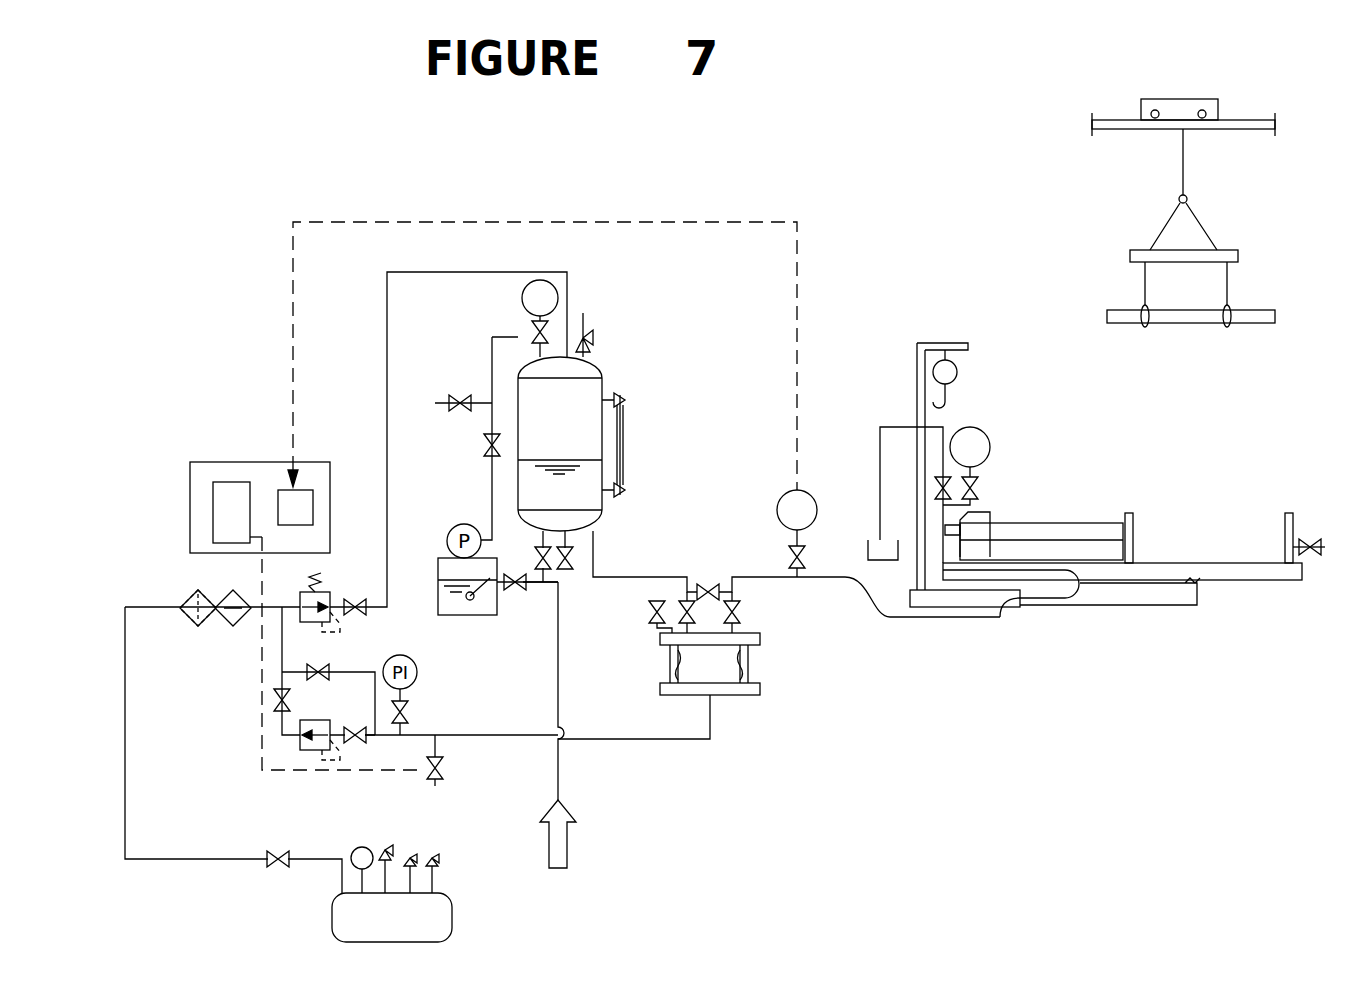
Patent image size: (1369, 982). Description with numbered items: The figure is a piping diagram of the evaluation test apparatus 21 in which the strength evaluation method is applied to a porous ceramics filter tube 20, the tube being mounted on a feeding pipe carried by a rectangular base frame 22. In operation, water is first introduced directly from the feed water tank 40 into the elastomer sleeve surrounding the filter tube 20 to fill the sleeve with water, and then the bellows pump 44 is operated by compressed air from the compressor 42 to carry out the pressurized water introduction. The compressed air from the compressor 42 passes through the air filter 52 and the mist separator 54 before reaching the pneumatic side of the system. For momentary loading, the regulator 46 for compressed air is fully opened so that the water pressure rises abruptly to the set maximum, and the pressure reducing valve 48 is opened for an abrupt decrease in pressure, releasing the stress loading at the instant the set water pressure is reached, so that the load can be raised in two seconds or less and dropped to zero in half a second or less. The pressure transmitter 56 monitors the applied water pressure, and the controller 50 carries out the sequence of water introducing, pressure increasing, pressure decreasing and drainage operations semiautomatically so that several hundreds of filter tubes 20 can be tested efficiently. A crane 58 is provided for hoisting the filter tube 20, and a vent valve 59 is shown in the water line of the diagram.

The filter tube 20 is at (1057, 530).
The evaluation test apparatus 21 is at (1165, 545).
The base frame 22 is at (1133, 602).
The feed water tank 40 is at (572, 405).
The compressor 42 is at (455, 895).
The bellows pump 44 is at (764, 659).
The regulator 46 is at (301, 762).
The pressure reducing valve 48 is at (345, 585).
The controller 50 is at (240, 462).
The air filter 52 is at (190, 622).
The mist separator 54 is at (234, 624).
The pressure transmitter 56 is at (777, 512).
The crane 58 is at (1140, 170).
The vent valve 59 is at (443, 776).